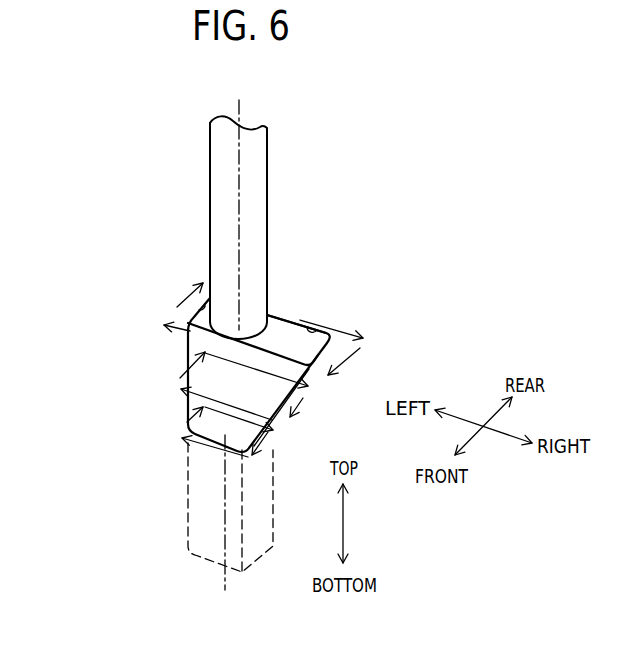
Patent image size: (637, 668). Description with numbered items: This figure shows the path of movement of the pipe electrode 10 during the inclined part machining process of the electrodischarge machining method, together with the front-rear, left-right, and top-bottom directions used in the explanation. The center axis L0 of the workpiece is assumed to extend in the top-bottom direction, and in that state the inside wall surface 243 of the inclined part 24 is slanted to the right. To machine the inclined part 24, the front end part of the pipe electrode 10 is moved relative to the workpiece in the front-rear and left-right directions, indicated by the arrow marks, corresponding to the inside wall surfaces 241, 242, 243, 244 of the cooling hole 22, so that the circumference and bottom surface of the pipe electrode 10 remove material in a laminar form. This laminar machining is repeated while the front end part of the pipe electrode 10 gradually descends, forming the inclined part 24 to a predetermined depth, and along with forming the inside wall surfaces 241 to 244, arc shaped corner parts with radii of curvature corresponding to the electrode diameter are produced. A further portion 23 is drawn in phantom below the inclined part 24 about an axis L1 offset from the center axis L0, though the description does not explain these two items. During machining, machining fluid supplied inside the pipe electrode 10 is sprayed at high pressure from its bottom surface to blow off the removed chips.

The pipe electrode 10 is at (208, 155).
The cooling hole 22 is at (278, 362).
The lower member (phantom) 23 is at (178, 494).
The inclined part 24 is at (182, 352).
The inside wall surface 241 is at (177, 307).
The inside wall surface 242 is at (278, 330).
The inside wall surface 243 is at (337, 333).
The inside wall surface 244 is at (308, 324).
The center axis L0 is at (240, 200).
The axis of lower member L1 is at (226, 528).